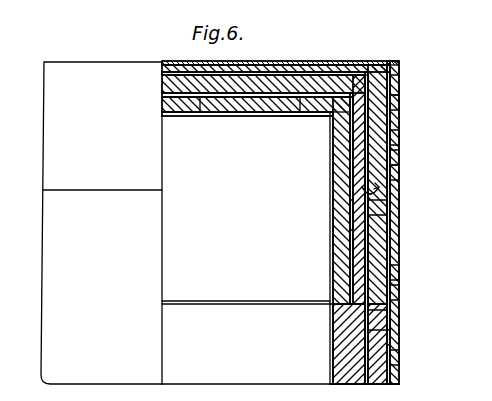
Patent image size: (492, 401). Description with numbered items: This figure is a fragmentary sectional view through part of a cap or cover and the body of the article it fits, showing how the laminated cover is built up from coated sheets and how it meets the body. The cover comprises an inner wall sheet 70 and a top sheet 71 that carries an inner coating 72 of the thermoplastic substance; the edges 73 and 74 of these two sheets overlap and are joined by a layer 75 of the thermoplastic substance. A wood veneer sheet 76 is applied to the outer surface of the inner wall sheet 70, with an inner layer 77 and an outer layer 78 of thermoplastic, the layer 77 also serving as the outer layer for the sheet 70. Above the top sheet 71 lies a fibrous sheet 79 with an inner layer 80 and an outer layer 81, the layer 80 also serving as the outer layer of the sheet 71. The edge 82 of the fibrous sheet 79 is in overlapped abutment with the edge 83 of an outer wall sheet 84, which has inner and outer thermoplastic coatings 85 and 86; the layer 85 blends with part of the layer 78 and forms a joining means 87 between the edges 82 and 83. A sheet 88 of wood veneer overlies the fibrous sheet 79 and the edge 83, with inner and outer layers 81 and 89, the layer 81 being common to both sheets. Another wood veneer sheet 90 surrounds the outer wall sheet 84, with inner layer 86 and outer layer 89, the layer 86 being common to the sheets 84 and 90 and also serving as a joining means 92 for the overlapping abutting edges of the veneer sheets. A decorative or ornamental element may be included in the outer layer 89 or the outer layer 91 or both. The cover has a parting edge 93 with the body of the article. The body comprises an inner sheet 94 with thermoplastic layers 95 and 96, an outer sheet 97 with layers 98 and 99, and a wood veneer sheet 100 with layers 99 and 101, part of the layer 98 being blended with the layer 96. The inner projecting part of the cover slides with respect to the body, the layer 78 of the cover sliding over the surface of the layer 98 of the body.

The inner wall sheet 70 is at (342, 193).
The top sheet 71 is at (272, 101).
The inner coating 72 is at (296, 115).
The edge of inner wall sheet 73 is at (366, 74).
The edge of top sheet 74 is at (346, 96).
The thermoplastic joining layer 75 is at (358, 82).
The wood veneer sheet 76 is at (352, 215).
The inner thermoplastic layer 77 is at (399, 138).
The outer thermoplastic layer 78 is at (398, 158).
The fibrous sheet 79 is at (192, 101).
The inner thermoplastic layer 80 is at (214, 113).
The outer thermoplastic layer 81 is at (243, 82).
The edge of fibrous sheet 82 is at (384, 63).
The edge of outer wall sheet 83 is at (393, 83).
The outer wall sheet 84 is at (398, 123).
The inner thermoplastic layer 85 is at (401, 87).
The outer thermoplastic layer 86 is at (400, 104).
The joining means 87 is at (400, 68).
The wood veneer sheet 88 is at (291, 69).
The outer thermoplastic layer 89 is at (263, 68).
The wood veneer sheet 90 is at (401, 171).
The outer layer 91 is at (398, 182).
The joining means 92 is at (389, 65).
The parting edge 93 is at (388, 209).
The inner sheet 94 is at (346, 341).
The thermoplastic layer 95 is at (335, 381).
The thermoplastic layer 96 is at (391, 361).
The outer sheet 97 is at (392, 340).
The thermoplastic layer 98 is at (392, 321).
The thermoplastic layer 99 is at (400, 294).
The wood veneer sheet 100 is at (400, 379).
The thermoplastic layer 101 is at (400, 276).